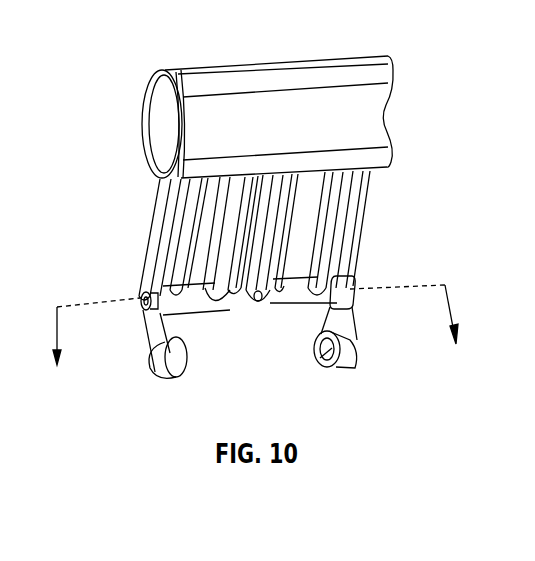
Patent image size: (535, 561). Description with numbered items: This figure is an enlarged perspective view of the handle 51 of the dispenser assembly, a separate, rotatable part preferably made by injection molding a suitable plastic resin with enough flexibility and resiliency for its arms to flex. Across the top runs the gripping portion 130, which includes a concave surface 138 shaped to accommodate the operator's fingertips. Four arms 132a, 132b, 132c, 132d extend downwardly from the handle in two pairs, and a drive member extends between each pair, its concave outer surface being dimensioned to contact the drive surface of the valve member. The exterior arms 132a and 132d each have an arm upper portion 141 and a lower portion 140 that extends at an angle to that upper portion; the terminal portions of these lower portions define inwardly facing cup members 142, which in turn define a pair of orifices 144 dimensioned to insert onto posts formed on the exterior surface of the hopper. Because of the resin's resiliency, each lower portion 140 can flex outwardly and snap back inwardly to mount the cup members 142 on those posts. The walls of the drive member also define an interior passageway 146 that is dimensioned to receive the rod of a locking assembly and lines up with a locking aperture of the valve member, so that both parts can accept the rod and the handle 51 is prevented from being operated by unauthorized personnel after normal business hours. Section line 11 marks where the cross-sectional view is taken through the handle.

The handle 51 is at (134, 28).
The gripping portion 130 is at (132, 98).
The concave surface 138 is at (208, 113).
The arm 132a is at (158, 204).
The arm 132b is at (216, 303).
The arm 132c is at (277, 300).
The arm 132d is at (358, 240).
The arm upper portion 141 is at (165, 240).
The interior passageway 146 is at (142, 306).
The lower portion 140 is at (150, 331).
The cup member 142 is at (343, 367).
The orifice 144 is at (318, 358).
The section line 11- 11 is at (260, 340).